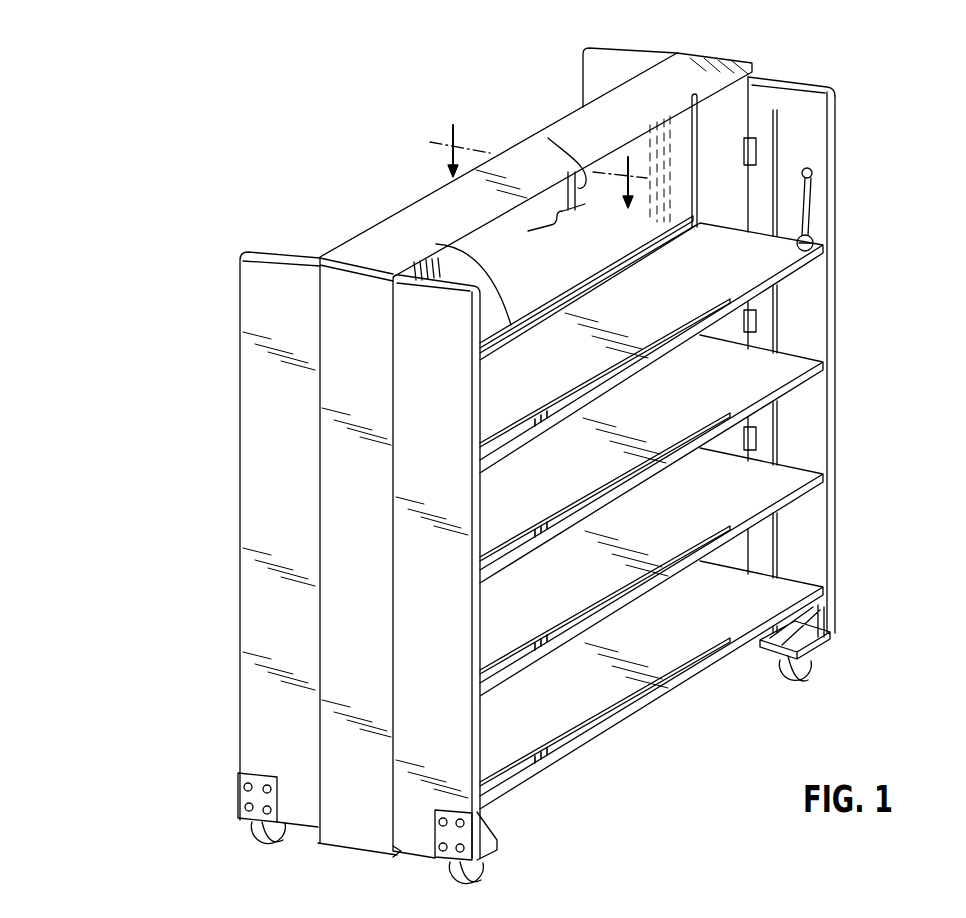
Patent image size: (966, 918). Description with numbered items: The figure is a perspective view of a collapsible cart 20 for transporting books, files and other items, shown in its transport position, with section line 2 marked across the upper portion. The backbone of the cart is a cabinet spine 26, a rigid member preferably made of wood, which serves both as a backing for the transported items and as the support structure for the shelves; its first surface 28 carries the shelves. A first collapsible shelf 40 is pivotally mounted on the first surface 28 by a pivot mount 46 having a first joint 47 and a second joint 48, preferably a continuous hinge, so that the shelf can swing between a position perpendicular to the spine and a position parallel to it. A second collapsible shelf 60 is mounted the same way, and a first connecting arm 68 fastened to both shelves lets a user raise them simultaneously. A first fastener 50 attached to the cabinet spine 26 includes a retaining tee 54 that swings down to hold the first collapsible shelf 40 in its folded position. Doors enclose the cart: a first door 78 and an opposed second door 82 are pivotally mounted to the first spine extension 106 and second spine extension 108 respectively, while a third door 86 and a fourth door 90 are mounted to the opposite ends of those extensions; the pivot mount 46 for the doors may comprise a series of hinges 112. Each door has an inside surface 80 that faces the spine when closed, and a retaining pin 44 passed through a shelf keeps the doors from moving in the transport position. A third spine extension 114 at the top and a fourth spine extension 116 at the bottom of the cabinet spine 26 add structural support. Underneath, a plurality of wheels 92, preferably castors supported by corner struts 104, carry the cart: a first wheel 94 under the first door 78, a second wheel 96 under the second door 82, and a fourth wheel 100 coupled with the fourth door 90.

The collapsible cart 20 is at (190, 530).
The cabinet spine 26 is at (556, 284).
The first surface 28 is at (670, 137).
The first collapsible shelf 40 is at (760, 270).
The retaining pin 44 is at (816, 246).
The pivot mount 46 is at (753, 152).
The first joint 47 is at (732, 305).
The second joint 48 is at (762, 320).
The first fastener 50 is at (538, 229).
The retaining tee 54 is at (548, 138).
The second collapsible shelf 60 is at (776, 374).
The first connecting arm 68 is at (778, 437).
The first door 78 is at (833, 505).
The inside surface 80 is at (807, 530).
The second door 82 is at (447, 765).
The third door 86 is at (597, 78).
The fourth door 90 is at (266, 317).
The wheels 92 is at (776, 680).
The first wheel 94 is at (810, 681).
The second wheel 96 is at (484, 870).
The fourth wheel 100 is at (250, 837).
The corner struts 104 is at (485, 832).
The first spine extension 106 is at (733, 100).
The second spine extension 108 is at (340, 308).
The hinges 112 is at (760, 432).
The third spine extension 114 is at (707, 63).
The fourth spine extension 116 is at (393, 843).
The section line indicator 2 is at (542, 168).